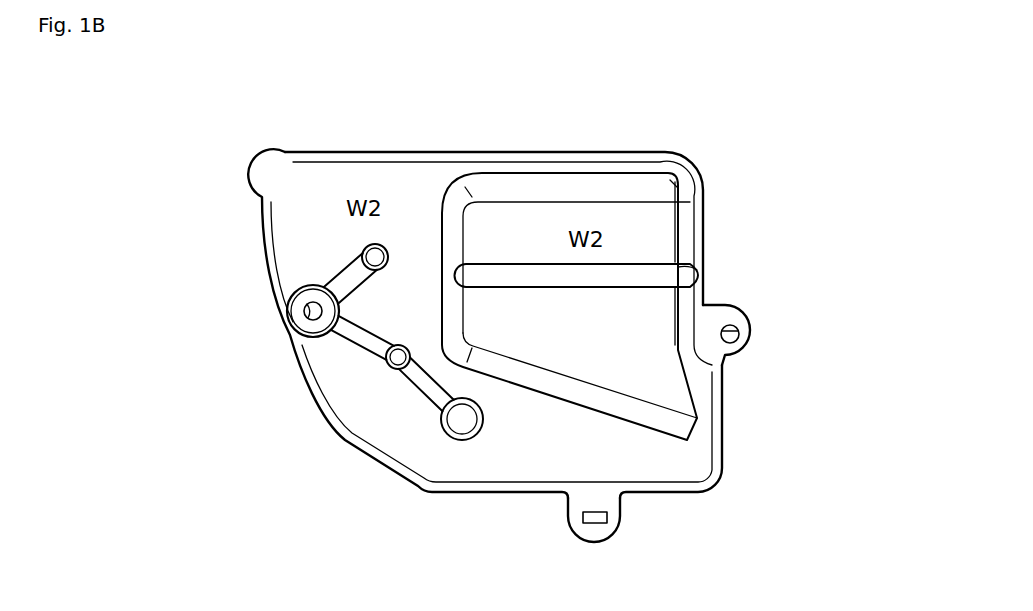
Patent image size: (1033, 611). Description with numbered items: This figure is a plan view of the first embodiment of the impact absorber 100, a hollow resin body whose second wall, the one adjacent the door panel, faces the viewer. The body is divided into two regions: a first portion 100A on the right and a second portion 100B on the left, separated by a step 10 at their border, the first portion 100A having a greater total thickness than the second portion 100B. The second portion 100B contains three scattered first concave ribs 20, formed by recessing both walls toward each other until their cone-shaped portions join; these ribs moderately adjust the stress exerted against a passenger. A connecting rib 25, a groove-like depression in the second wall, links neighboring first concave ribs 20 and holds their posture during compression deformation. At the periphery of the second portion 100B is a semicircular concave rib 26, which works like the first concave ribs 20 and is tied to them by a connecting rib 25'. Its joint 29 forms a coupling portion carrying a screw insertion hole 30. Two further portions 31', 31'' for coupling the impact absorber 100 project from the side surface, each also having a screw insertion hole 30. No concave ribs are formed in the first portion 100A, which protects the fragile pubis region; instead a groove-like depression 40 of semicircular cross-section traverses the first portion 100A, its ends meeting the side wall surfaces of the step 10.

The impact absorber 100 is at (219, 198).
The first portion 100A is at (632, 217).
The second portion 100B is at (391, 439).
The step 10 is at (444, 215).
The first concave rib 20 is at (372, 244).
The connecting rib 25 is at (433, 452).
The connecting rib 25' is at (303, 329).
The semicircular concave rib 26 is at (299, 317).
The joint 29 is at (299, 323).
The screw insertion hole 30 is at (304, 310).
The portion for coupling the impact absorber 31' is at (616, 544).
The portion for coupling the impact absorber 31'' is at (771, 343).
The groove-like depression 40 is at (698, 264).